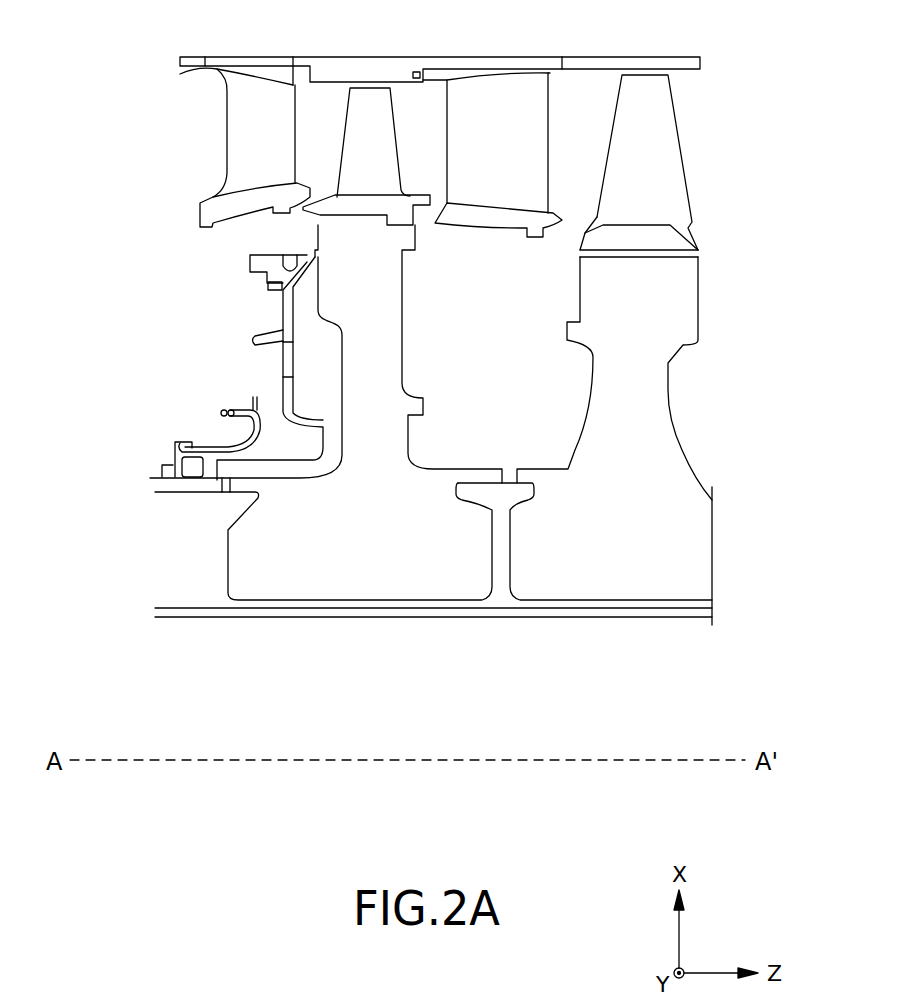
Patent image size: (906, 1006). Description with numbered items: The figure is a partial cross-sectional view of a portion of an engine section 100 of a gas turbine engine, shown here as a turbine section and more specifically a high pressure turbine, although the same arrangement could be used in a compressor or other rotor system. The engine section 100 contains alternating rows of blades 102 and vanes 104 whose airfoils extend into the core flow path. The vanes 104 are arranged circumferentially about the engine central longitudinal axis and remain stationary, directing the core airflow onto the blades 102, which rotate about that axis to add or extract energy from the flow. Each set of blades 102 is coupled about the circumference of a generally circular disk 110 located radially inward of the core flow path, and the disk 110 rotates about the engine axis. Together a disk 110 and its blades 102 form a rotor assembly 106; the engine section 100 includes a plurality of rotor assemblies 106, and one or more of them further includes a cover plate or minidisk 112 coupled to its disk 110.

The engine section 100 is at (123, 93).
The blades 102 is at (372, 117).
The vanes 104 is at (233, 163).
The rotor assembly 106 is at (468, 667).
The disk 110 is at (413, 443).
The minidisk 112 is at (268, 430).